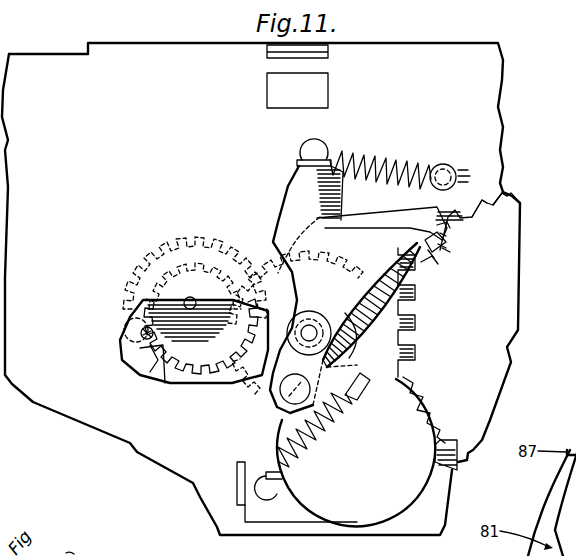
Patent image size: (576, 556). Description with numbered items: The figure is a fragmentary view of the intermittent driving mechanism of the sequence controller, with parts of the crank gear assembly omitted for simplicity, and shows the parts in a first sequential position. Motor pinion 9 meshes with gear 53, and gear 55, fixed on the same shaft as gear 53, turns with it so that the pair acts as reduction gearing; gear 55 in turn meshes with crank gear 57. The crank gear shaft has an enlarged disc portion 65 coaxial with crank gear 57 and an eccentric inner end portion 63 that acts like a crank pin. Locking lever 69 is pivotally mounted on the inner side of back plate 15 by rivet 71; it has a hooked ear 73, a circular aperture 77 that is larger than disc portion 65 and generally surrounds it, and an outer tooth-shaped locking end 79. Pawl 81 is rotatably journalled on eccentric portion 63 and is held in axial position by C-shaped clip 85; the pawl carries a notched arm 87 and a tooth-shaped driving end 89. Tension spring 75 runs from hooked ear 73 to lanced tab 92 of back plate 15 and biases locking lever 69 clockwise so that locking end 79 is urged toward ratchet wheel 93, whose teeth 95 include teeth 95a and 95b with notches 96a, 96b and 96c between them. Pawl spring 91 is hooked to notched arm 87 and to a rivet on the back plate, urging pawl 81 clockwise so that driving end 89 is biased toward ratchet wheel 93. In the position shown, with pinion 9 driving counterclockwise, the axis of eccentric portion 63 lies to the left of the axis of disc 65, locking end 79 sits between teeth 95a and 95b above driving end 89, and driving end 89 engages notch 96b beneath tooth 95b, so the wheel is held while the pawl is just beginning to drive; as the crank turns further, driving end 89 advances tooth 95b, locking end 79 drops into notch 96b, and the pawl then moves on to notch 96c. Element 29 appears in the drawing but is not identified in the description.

The back plate 15 is at (485, 88).
The block 29 is at (322, 90).
The notched arm 87 is at (310, 148).
The pawl spring 91 is at (387, 163).
The pawl 81 is at (279, 214).
The locking lever 69 is at (361, 218).
The pawl tip 96a is at (434, 232).
The ratchet wheel tooth 95a is at (447, 225).
The locking end 79 is at (444, 233).
The ratchet wheel tooth 95b is at (441, 244).
The notch 96b is at (432, 252).
The driving end 89 is at (446, 249).
The notch 96c is at (425, 255).
The ratchet wheel 93 is at (520, 215).
The ratchet teeth 95 is at (505, 196).
The disc portion 65 is at (405, 357).
The eccentric inner end portion 63 is at (312, 325).
The C-shaped clip 85 is at (322, 321).
The circular aperture 77 is at (362, 334).
The gear 55 is at (180, 237).
The gear 53 is at (143, 282).
The crank gear 57 is at (272, 270).
The motor pinion 9 is at (152, 352).
The rivet 71 is at (285, 395).
The hooked ear 73 is at (367, 393).
The tension spring 75 is at (312, 457).
The lanced tab 92 is at (282, 482).